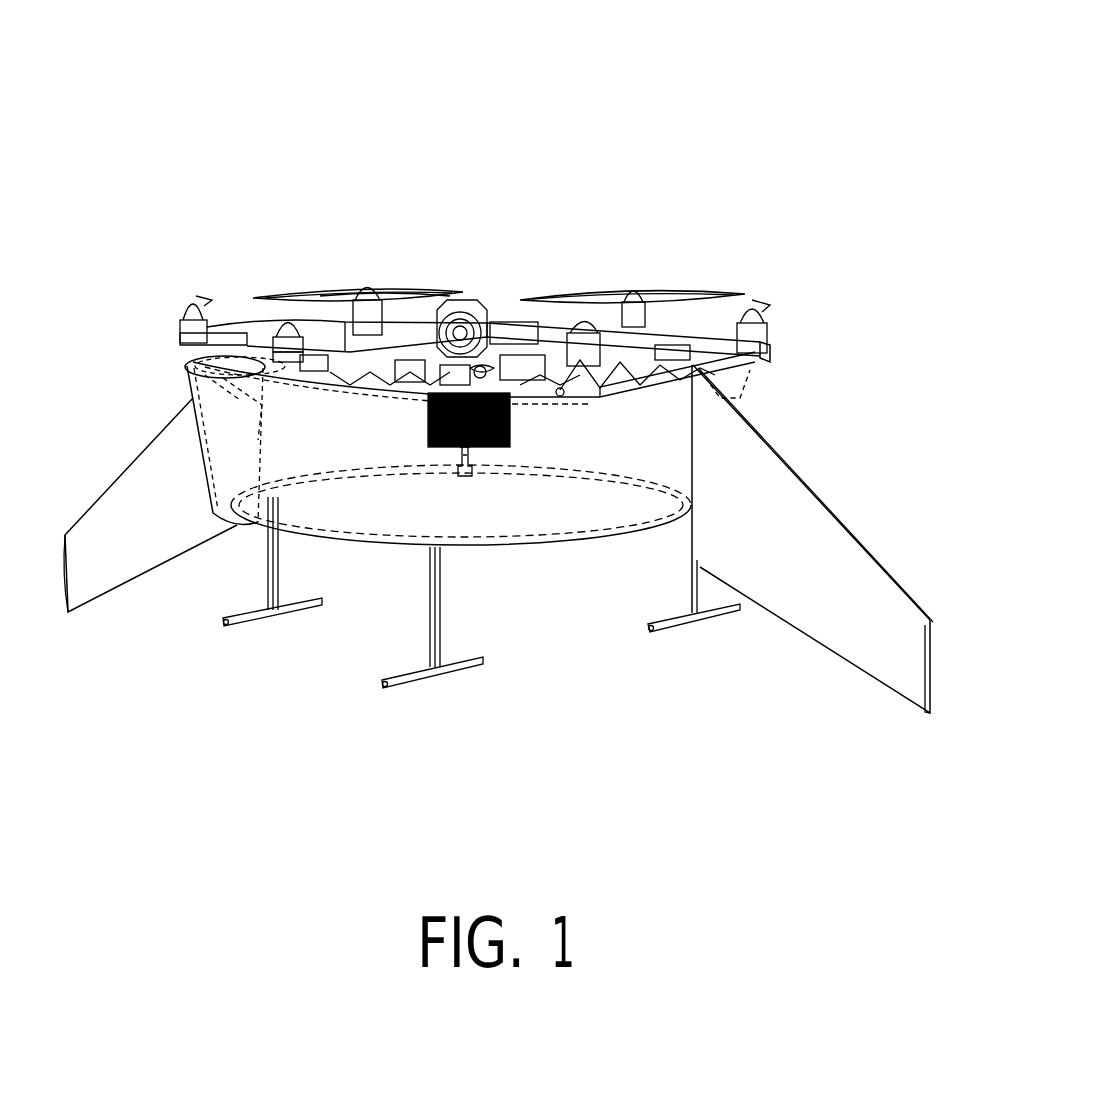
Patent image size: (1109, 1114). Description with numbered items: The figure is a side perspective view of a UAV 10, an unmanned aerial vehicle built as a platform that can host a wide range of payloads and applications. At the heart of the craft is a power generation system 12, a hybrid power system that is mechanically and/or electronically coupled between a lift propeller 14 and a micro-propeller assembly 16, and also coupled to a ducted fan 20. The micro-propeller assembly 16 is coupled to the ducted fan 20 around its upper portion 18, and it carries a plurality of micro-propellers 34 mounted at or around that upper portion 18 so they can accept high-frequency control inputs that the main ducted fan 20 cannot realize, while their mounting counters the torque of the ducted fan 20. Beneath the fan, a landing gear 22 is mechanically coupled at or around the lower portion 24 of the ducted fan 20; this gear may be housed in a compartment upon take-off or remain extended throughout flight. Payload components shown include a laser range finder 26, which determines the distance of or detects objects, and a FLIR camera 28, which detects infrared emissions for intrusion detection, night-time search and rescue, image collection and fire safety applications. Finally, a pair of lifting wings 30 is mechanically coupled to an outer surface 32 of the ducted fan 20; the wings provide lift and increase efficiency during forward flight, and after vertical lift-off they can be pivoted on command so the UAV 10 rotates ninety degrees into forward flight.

The UAV 10 is at (675, 63).
The power generation system 12 is at (520, 437).
The lift propeller 14 is at (470, 478).
The micro-propeller assembly 16 is at (777, 287).
The upper portion 18 is at (192, 367).
The ducted fan 20 is at (463, 545).
The landing gear 22 is at (275, 617).
The lower portion 24 is at (410, 545).
The laser range finder 26 is at (447, 287).
The FLIR camera 28 is at (513, 307).
The lifting wings 30 is at (140, 512).
The outer surface 32 is at (735, 395).
The micro-propellers 34 is at (185, 302).